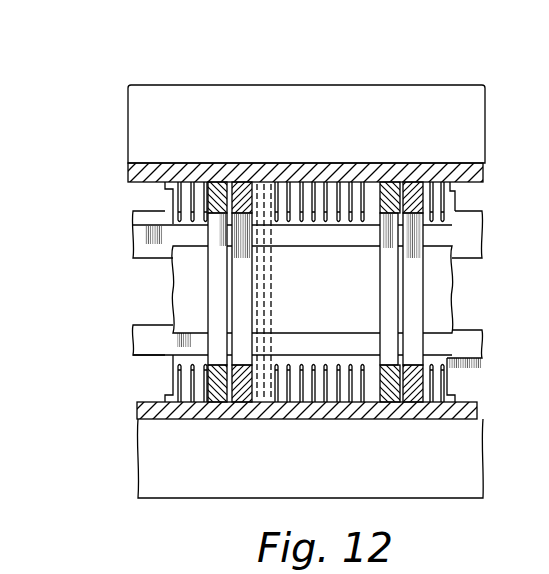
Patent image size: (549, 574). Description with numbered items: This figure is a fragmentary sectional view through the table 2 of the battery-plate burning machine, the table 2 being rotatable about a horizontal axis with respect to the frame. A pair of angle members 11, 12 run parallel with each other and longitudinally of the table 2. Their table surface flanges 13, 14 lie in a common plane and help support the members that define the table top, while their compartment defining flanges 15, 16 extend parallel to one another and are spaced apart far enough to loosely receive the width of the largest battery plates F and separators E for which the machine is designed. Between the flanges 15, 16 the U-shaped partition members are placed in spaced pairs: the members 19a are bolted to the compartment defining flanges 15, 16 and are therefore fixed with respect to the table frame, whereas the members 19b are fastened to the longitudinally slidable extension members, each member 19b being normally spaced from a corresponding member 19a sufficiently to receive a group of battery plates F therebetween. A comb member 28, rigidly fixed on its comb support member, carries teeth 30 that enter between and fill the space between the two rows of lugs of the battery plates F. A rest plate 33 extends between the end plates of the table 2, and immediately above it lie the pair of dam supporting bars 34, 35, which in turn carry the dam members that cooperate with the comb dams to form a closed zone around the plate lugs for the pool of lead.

The table 2 is at (298, 75).
The angle member 11 is at (197, 85).
The angle member 12 is at (438, 502).
The table surface flange 13 is at (398, 93).
The table surface flange 14 is at (228, 487).
The compartment defining flange 15 is at (360, 170).
The compartment defining flange 16 is at (253, 410).
The U-shaped partition member 19a is at (219, 188).
The U-shaped partition member 19b is at (240, 188).
The comb member 28 is at (343, 185).
The teeth 30 is at (358, 221).
The rest plate 33 is at (182, 285).
The dam supporting bar 34 is at (148, 338).
The dam supporting bar 35 is at (143, 247).
The separators E is at (264, 283).
The battery plates F is at (258, 262).